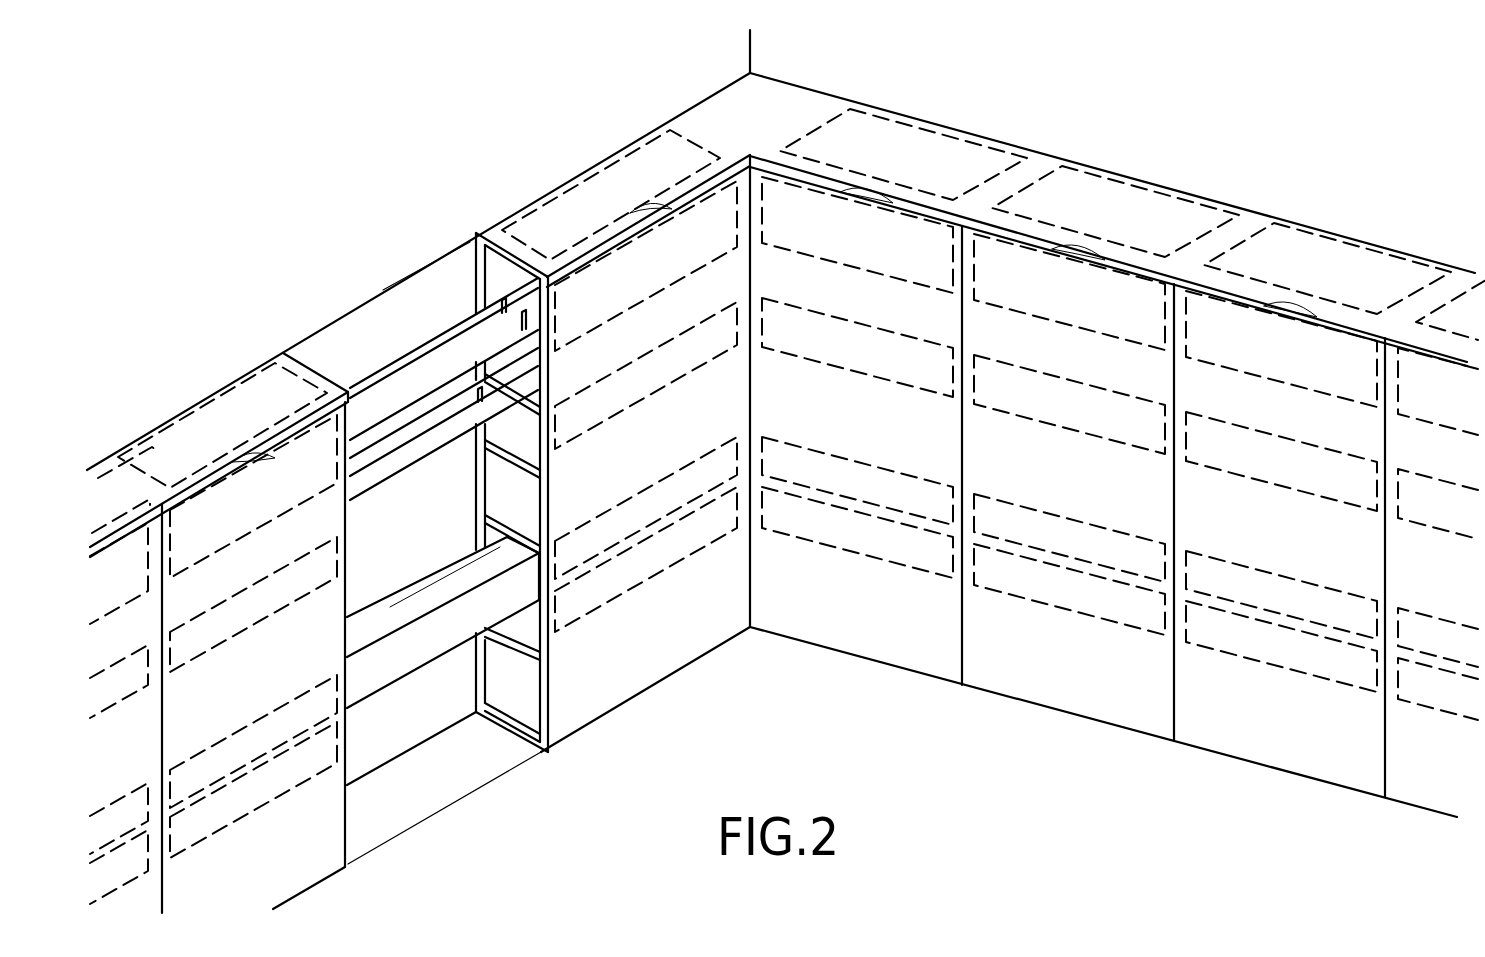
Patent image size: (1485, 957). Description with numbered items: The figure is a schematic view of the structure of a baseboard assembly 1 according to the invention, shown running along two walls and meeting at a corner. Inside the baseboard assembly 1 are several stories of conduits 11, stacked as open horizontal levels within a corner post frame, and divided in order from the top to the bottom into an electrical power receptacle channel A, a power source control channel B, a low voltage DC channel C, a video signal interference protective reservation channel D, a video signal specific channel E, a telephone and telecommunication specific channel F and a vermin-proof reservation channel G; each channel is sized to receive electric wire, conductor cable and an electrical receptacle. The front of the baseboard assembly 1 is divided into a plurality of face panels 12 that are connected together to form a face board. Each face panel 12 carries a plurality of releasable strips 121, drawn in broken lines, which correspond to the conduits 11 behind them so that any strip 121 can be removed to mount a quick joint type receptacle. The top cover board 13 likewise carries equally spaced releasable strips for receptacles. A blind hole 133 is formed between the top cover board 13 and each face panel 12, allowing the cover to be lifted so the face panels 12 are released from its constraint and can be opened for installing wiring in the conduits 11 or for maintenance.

The baseboard assembly 1 is at (707, 122).
The conduits 11 is at (478, 262).
The face panels 12 is at (698, 637).
The top cover board 13 is at (607, 190).
The releasable strips 121 is at (660, 494).
The blind hole 133 is at (648, 204).
The electrical power receptacle channel A is at (543, 305).
The power source control channel B is at (530, 380).
The low voltage DC channel C is at (546, 452).
The video signal interference protective reservation channel D is at (490, 518).
The video signal specific channel E is at (530, 572).
The telephone and telecommunication specific channel F is at (525, 625).
The vermin-proof reservation channel G is at (522, 690).